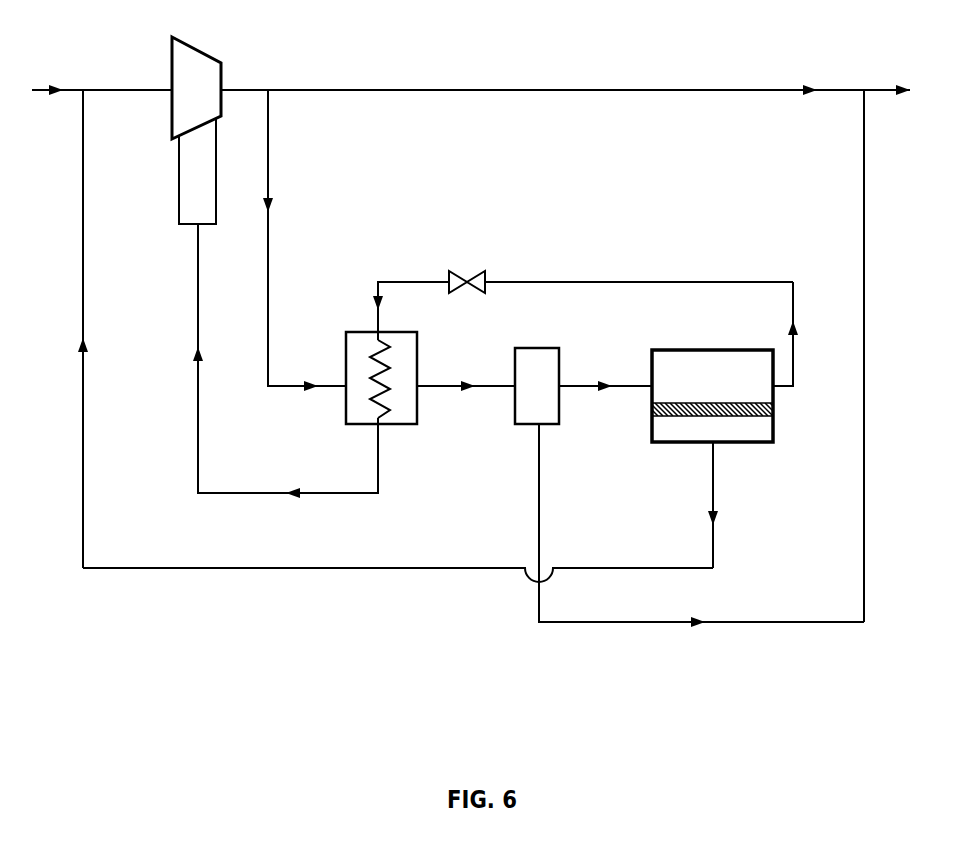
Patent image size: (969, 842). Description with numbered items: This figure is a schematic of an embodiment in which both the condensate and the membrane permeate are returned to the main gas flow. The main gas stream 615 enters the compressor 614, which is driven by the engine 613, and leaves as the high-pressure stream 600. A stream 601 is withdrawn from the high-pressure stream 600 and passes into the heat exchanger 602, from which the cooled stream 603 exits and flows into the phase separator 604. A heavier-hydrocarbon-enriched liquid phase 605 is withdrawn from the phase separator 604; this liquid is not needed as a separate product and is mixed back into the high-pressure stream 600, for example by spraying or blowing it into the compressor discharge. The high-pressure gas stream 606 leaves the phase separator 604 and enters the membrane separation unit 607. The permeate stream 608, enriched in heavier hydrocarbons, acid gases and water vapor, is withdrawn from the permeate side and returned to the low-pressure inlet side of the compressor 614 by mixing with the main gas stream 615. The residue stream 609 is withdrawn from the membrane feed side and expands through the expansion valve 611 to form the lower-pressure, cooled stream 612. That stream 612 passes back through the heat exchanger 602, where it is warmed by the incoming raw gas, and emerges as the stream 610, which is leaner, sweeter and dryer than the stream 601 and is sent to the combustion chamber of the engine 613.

The high-pressure stream 600 is at (565, 343).
The stream 601 is at (304, 240).
The heat exchanger 602 is at (417, 424).
The cooled stream 603 is at (466, 399).
The phase separator 604 is at (559, 424).
The heavier-hydrocarbon-enriched liquid phase 605 is at (701, 537).
The high-pressure gas stream 606 is at (605, 399).
The membrane separation unit 607 is at (737, 442).
The permeate stream 608 is at (736, 505).
The residue stream 609 is at (745, 322).
The stream 610 is at (285, 375).
The expansion valve 611 is at (485, 273).
The lower-pressure, cooled stream 612 is at (388, 311).
The engine 613 is at (179, 174).
The compressor 614 is at (214, 56).
The main gas stream 615 is at (372, 322).